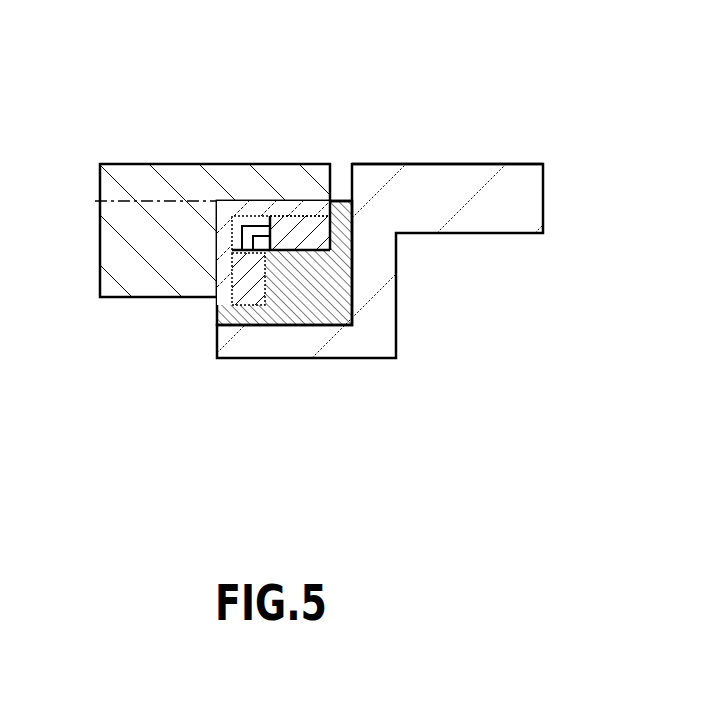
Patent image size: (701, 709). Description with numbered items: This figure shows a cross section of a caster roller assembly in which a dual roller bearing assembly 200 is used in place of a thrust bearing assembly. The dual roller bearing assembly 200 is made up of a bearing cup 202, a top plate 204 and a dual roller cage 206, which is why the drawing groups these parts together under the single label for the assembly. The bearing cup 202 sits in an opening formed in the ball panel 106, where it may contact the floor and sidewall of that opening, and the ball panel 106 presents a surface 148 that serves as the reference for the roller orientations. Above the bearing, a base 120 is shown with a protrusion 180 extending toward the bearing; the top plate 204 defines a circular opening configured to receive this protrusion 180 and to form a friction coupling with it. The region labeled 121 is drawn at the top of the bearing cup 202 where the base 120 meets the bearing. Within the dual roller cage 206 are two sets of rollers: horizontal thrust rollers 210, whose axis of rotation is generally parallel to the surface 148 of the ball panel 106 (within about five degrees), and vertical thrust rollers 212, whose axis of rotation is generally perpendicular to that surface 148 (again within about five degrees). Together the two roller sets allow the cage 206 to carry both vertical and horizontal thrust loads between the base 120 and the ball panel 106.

The ball panel 106 is at (480, 222).
The surface of ball panel 148 is at (473, 162).
The base 120 is at (128, 177).
The surface of conductive structure 121 is at (292, 201).
The protrusion 180 is at (164, 185).
The dual roller bearing assembly 200 is at (286, 367).
The bearing cup 202 is at (327, 300).
The top plate 204 is at (220, 285).
The dual roller cage 206 is at (281, 344).
The horizontal thrust rollers 210 is at (290, 233).
The vertical thrust rollers 212 is at (255, 339).